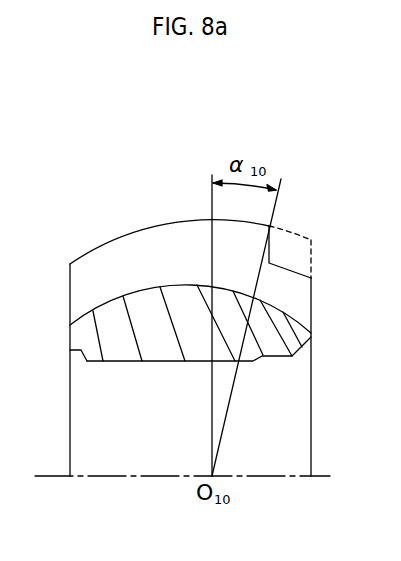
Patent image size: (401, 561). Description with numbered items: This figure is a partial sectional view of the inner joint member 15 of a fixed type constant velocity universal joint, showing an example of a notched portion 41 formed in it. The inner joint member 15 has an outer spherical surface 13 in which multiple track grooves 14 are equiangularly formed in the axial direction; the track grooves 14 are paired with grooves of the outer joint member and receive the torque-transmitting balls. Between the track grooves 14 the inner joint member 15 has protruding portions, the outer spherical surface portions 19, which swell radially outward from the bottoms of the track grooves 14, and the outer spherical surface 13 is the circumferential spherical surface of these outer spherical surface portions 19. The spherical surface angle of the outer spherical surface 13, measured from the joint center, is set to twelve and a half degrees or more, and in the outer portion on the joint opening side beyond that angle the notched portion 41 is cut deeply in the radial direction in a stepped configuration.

The outer spherical surface 13 is at (100, 246).
The outer spherical surface portions 19 is at (153, 248).
The notched portion 41 is at (285, 268).
The track grooves 14 is at (290, 316).
The inner joint member 15 is at (92, 333).